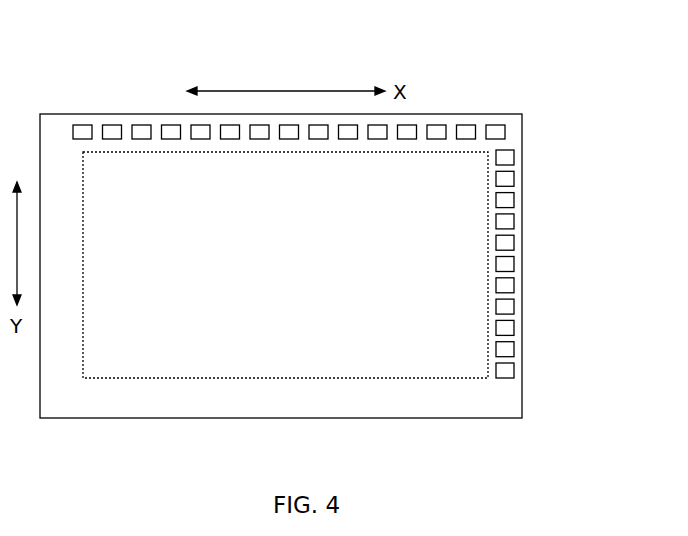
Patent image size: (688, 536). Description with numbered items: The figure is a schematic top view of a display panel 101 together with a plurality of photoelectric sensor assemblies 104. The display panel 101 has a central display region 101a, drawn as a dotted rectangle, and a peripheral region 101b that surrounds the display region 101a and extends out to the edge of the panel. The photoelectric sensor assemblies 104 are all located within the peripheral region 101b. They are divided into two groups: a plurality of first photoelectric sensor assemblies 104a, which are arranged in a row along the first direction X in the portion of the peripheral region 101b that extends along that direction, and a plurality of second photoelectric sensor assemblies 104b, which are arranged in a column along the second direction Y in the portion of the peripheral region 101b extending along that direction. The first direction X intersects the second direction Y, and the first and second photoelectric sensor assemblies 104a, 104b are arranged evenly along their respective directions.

The display panel 101 is at (522, 132).
The display region 101a is at (420, 345).
The peripheral region 101b is at (487, 392).
The photoelectric sensor assemblies 104 is at (311, 199).
The first photoelectric sensor assemblies 104a is at (432, 137).
The second photoelectric sensor assemblies 104b is at (506, 178).